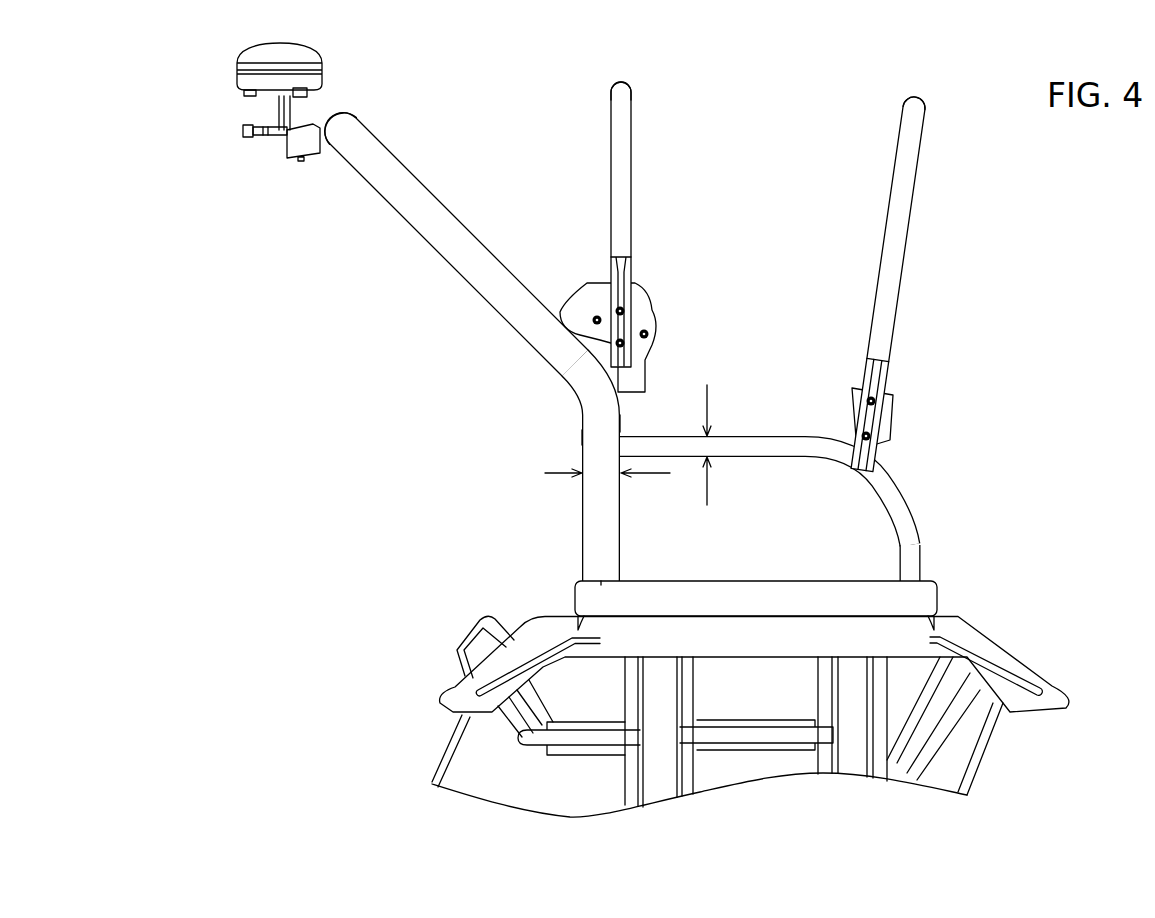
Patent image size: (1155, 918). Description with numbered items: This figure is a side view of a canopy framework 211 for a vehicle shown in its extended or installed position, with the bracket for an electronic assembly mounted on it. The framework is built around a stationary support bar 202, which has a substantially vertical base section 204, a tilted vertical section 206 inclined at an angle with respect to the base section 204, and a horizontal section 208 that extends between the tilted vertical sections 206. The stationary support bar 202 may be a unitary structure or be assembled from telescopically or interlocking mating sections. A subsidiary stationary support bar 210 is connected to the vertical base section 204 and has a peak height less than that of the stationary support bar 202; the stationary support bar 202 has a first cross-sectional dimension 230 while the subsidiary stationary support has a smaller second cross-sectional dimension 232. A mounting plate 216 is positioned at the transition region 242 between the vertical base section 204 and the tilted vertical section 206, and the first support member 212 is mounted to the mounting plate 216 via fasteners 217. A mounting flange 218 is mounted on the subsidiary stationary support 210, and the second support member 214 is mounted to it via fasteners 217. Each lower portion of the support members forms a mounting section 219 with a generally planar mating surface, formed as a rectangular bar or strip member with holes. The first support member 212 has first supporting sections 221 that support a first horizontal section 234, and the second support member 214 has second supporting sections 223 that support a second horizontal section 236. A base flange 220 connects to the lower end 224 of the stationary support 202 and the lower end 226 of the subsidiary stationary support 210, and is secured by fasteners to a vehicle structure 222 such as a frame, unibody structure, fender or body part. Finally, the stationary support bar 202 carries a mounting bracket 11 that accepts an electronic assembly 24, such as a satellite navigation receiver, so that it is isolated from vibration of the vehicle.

The mounting bracket 11 is at (238, 106).
The electronic assembly 24 is at (255, 52).
The stationary support bar 202 is at (372, 241).
The vertical base sections 204 is at (593, 502).
The tilted vertical sections 206 is at (496, 298).
The horizontal section 208 is at (333, 116).
The subsidiary stationary support bar 210 is at (788, 438).
The canopy framework 211 is at (1082, 228).
The first support member 212 is at (623, 137).
The second support member 214 is at (903, 192).
The mounting plates 216 is at (638, 312).
The fasteners 217 is at (619, 310).
The mounting flanges 218 is at (888, 418).
The mounting section 219 is at (596, 318).
The base flanges 220 is at (910, 598).
The first supporting sections 221 is at (620, 153).
The vehicle structure 222 is at (967, 630).
The second supporting sections 223 is at (895, 217).
The lower ends of the stationary support 224 is at (603, 568).
The lower ends of subsidiary stationary support 226 is at (910, 568).
The first cross-sectional dimension 230 is at (545, 473).
The second cross-sectional dimension 232 is at (707, 403).
The first horizontal section 234 is at (615, 80).
The second horizontal section 236 is at (912, 98).
The transition region 242 is at (610, 415).